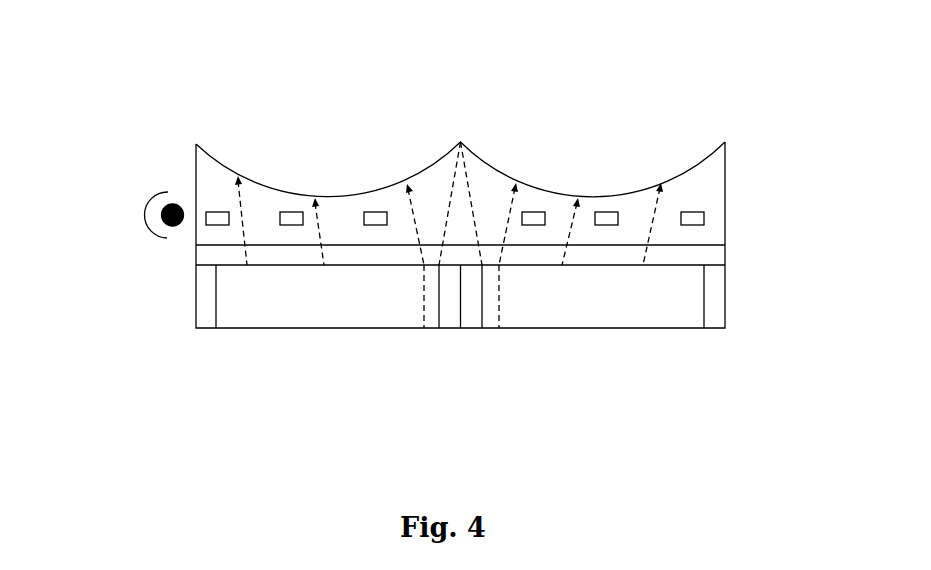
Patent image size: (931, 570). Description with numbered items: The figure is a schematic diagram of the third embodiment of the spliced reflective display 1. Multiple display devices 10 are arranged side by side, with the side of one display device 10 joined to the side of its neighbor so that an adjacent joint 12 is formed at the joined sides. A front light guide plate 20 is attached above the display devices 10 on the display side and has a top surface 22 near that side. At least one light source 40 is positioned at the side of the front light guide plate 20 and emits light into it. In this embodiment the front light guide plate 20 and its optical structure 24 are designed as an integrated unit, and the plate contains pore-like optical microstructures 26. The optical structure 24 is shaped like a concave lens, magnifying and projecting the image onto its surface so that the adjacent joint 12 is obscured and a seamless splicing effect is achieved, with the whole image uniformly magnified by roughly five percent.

The spliced reflective display 1 is at (188, 129).
The display device 10 is at (693, 311).
The adjacent joint 12 is at (458, 328).
The front light guide plate 20 is at (707, 237).
The top surface 22 is at (224, 180).
The optical structure 24 is at (488, 162).
The pore-like optical microstructures 26 is at (704, 211).
The light source 40 is at (163, 232).